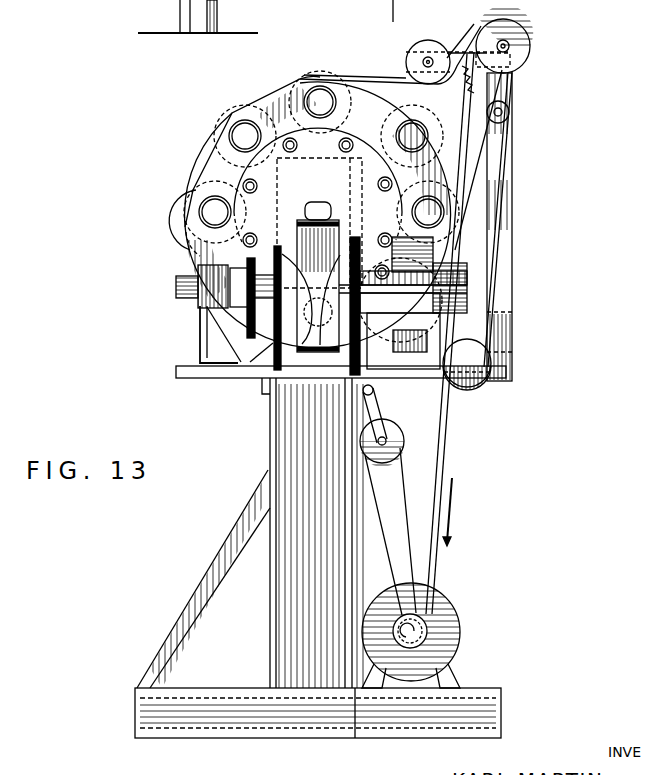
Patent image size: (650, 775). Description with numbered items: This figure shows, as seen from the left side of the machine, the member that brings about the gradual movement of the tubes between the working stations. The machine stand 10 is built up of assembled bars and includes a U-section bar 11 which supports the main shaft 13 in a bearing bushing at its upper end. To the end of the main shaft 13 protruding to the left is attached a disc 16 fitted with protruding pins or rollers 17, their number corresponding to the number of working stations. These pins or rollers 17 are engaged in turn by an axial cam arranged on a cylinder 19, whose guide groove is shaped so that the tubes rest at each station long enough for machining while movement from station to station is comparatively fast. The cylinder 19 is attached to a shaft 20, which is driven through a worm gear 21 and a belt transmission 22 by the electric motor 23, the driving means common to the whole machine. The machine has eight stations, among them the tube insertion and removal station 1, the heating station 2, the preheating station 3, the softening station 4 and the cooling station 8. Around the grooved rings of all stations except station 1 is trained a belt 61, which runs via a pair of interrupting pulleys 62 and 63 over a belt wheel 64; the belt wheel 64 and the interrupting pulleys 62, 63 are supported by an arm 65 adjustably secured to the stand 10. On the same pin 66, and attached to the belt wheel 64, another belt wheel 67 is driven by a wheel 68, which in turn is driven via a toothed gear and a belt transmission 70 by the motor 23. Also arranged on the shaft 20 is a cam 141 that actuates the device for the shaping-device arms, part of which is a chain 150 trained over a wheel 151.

The tube insertion and removal station 1 is at (419, 131).
The station 2 is at (306, 73).
The station 3 is at (221, 107).
The station 4 is at (184, 202).
The station 8 is at (451, 188).
The machine stand 10 is at (214, 748).
The U-section bar 11 is at (285, 594).
The main shaft 13 is at (312, 206).
The disc 16 is at (237, 197).
The pins or rollers 17 is at (253, 253).
The cylinder 19 is at (320, 370).
The shaft 20 is at (185, 304).
The worm gear 21 is at (460, 273).
The belt transmission 22 is at (434, 606).
The electric motor 23 is at (446, 634).
The belt 61 is at (378, 78).
The interrupting pulley 62 is at (425, 54).
The interrupting pulley 63 is at (510, 113).
The belt wheel 64 is at (522, 49).
The arm 65 is at (512, 214).
The pin 66 is at (506, 43).
The belt wheel 67 is at (498, 264).
The wheel 68 is at (472, 380).
The belt transmission 70 is at (396, 532).
The cam 141 is at (264, 327).
The chain 150 is at (264, 0).
The wheel 151 is at (326, 0).